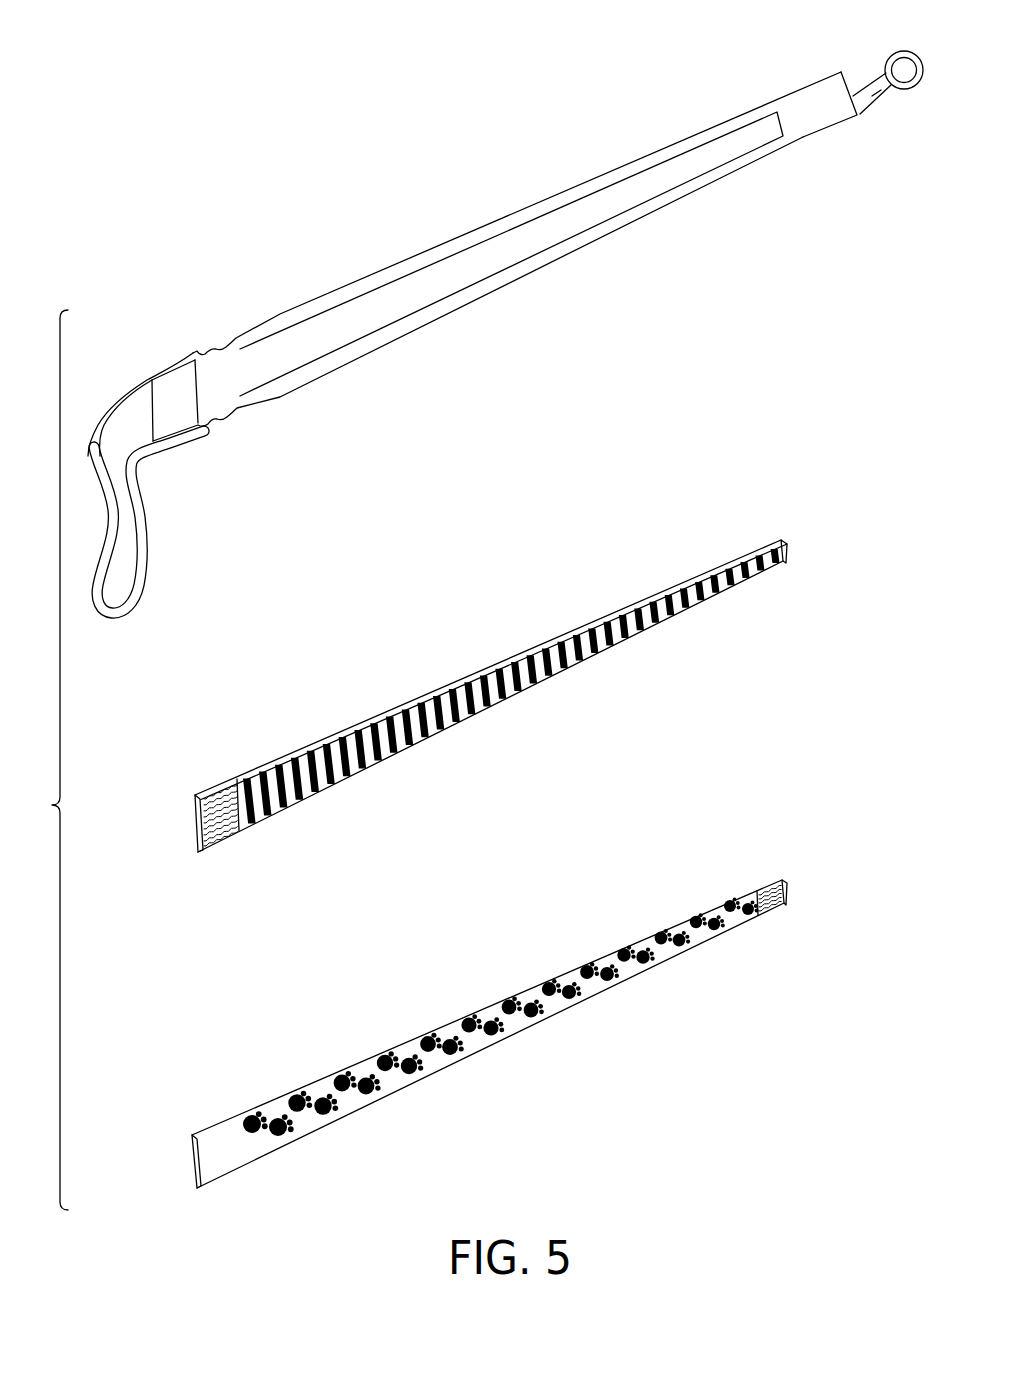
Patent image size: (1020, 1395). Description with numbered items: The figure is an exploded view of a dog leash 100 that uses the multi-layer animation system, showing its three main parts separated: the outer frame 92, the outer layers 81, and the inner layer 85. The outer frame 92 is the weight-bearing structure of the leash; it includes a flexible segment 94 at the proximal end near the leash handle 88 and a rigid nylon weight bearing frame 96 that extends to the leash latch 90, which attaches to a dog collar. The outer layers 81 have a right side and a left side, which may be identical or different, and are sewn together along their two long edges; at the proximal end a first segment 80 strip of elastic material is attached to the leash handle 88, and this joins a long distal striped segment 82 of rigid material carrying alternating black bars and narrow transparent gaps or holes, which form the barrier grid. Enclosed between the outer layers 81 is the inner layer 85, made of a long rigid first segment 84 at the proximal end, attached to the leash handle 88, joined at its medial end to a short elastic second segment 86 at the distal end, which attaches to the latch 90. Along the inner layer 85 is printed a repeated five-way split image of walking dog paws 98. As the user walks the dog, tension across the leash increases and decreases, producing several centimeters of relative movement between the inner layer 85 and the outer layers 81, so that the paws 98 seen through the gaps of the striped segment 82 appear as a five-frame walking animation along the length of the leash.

The dog leash 100 is at (36, 760).
The outer frame 92 is at (545, 297).
The latch 90 is at (867, 77).
The rigid nylon weight bearing frame 96 is at (777, 86).
The flexible segment 94 is at (240, 320).
The leash handle 88 is at (148, 550).
The outer layers 81 is at (156, 795).
The first segment 80 is at (244, 760).
The striped section 82 is at (775, 528).
The inner layer 85 is at (158, 1130).
The first segment of the inner layer 84 is at (744, 892).
The second segment of the inner layer 86 is at (789, 872).
The paws 98 is at (545, 1013).